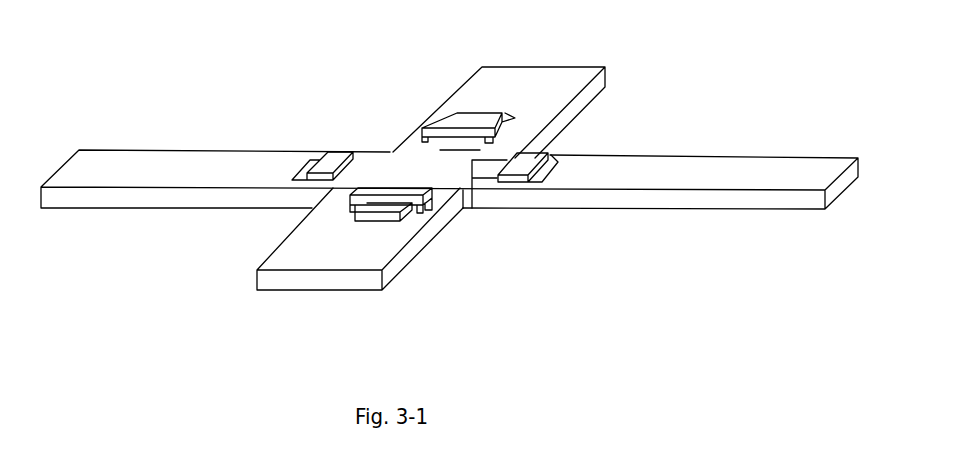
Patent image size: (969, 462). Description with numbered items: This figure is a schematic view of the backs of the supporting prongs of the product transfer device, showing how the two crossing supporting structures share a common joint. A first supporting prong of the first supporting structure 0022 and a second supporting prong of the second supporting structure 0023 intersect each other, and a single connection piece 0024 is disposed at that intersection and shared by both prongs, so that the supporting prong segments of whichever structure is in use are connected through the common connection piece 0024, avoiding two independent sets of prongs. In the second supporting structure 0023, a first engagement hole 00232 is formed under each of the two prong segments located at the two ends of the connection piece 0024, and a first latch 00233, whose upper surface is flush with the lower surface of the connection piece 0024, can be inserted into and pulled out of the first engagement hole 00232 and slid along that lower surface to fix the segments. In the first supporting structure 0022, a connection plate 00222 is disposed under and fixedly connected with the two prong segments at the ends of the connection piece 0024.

The first supporting structure 0022 is at (722, 176).
The second supporting structure 0023 is at (348, 258).
The connection piece 0024 is at (460, 180).
The connection plate 00222 is at (481, 167).
The first engagement hole 00232 is at (486, 127).
The first latch 00233 is at (452, 152).